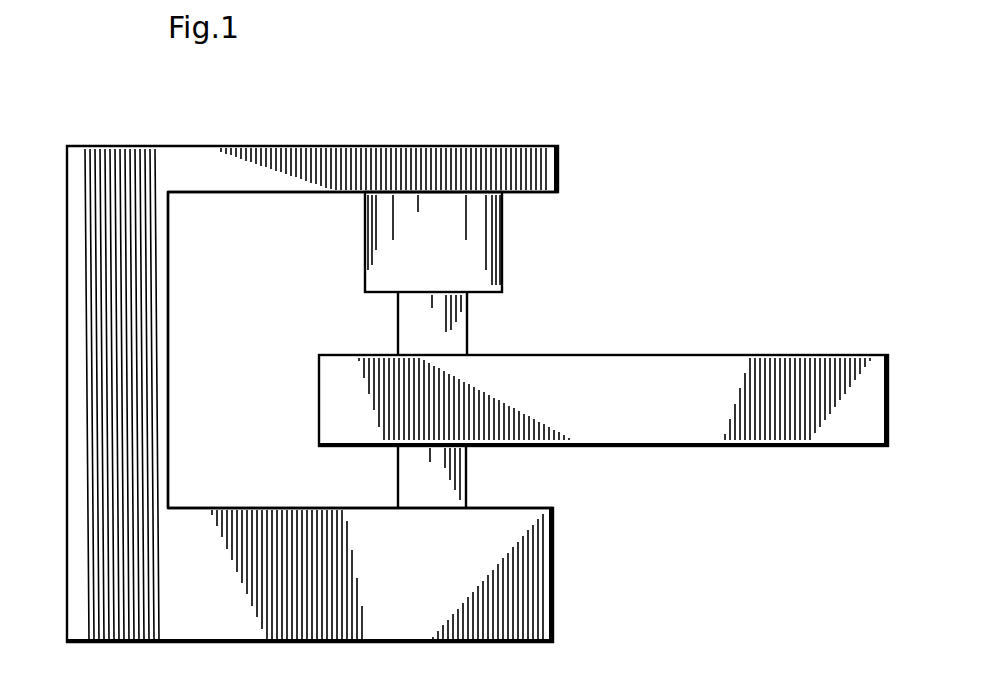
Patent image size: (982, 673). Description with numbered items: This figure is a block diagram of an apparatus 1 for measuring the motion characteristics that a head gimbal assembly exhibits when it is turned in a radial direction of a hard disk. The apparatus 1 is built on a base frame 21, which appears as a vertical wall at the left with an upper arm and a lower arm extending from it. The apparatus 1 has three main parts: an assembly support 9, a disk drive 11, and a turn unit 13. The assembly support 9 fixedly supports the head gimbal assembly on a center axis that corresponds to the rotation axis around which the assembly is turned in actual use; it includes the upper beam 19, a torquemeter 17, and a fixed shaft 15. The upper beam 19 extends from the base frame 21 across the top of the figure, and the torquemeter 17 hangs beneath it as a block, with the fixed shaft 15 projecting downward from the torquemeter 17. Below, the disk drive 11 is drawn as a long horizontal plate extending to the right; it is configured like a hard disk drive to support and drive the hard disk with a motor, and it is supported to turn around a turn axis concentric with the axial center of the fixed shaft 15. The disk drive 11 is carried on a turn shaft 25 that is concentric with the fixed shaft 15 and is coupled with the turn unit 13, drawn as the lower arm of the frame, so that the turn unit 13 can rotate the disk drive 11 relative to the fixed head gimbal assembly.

The apparatus 1 is at (511, 125).
The assembly support 9 is at (553, 148).
The disk drive 11 is at (848, 355).
The turn unit 13 is at (556, 577).
The fixed shaft 15 is at (466, 314).
The torquemeter 17 is at (487, 244).
The upper beam 19 is at (437, 150).
The base frame 21 is at (76, 295).
The turn shaft 25 is at (466, 485).